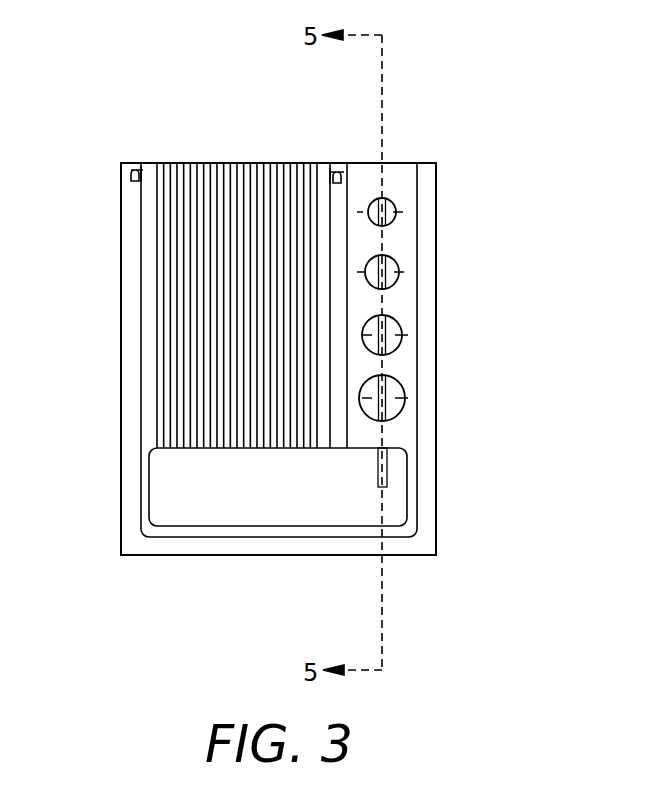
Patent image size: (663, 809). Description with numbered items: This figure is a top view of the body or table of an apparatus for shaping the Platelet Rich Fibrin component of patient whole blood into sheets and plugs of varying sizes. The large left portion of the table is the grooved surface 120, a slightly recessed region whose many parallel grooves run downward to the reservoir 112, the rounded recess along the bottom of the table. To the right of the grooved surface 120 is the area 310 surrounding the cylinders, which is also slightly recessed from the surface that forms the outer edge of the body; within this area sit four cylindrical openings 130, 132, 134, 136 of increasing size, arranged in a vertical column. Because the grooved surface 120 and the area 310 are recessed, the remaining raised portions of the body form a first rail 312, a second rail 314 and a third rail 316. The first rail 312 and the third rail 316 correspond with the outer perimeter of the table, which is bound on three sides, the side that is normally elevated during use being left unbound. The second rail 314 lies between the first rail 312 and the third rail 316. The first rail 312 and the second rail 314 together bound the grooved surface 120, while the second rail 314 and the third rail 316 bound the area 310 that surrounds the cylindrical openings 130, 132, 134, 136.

The reservoir 112 is at (202, 507).
The grooved surface 120 is at (205, 360).
The cylindrical opening 130 is at (403, 405).
The cylindrical opening 132 is at (402, 338).
The cylindrical opening 134 is at (398, 278).
The cylindrical opening 136 is at (395, 216).
The area surrounding the cylinders 310 is at (360, 435).
The first rail 312 is at (147, 173).
The second rail 314 is at (337, 163).
The third rail 316 is at (428, 176).